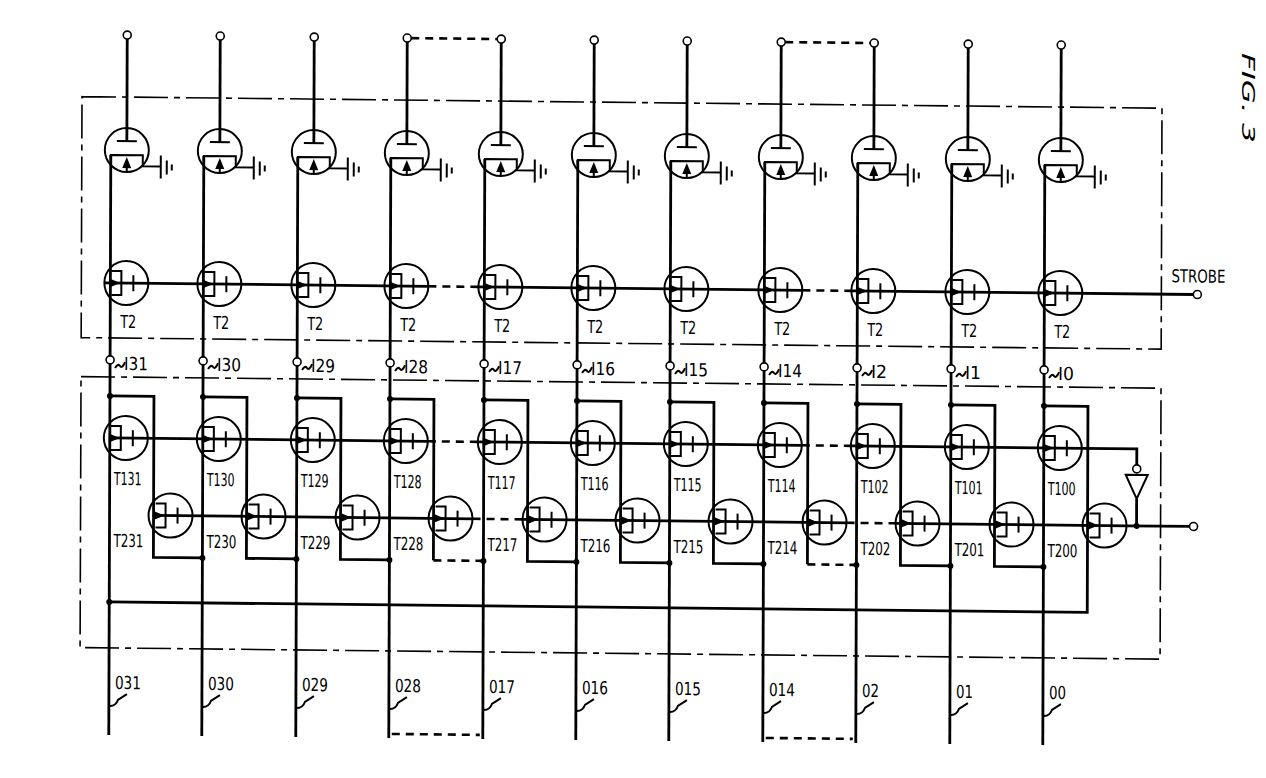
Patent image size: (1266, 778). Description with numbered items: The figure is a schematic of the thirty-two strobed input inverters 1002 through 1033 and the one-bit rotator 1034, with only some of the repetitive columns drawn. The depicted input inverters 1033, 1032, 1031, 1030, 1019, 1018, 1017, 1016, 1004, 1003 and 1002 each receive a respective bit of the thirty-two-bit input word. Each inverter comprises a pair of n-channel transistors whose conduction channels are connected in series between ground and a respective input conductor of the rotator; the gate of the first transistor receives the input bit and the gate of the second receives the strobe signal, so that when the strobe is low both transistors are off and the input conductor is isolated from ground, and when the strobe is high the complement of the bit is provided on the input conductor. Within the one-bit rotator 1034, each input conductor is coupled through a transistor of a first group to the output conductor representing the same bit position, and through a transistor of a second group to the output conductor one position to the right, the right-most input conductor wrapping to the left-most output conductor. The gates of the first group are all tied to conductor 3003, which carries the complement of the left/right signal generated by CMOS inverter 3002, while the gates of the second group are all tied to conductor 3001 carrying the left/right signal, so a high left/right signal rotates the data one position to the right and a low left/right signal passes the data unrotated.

The strobed input inverter 1033 is at (139, 122).
The strobed input inverter 1032 is at (232, 123).
The strobed input inverter 1031 is at (326, 124).
The strobed input inverter 1030 is at (419, 125).
The strobed input inverter 1019 is at (513, 126).
The strobed input inverter 1018 is at (606, 127).
The strobed input inverter 1017 is at (699, 128).
The strobed input inverter 1016 is at (793, 129).
The strobed input inverter 1004 is at (886, 130).
The strobed input inverter 1003 is at (980, 131).
The strobed input inverter 1002 is at (1073, 132).
The one-bit rotator 1034 is at (1163, 409).
The conductor 3003 is at (1096, 436).
The CMOS inverter 3002 is at (1149, 468).
The conductor 3001 is at (1168, 517).